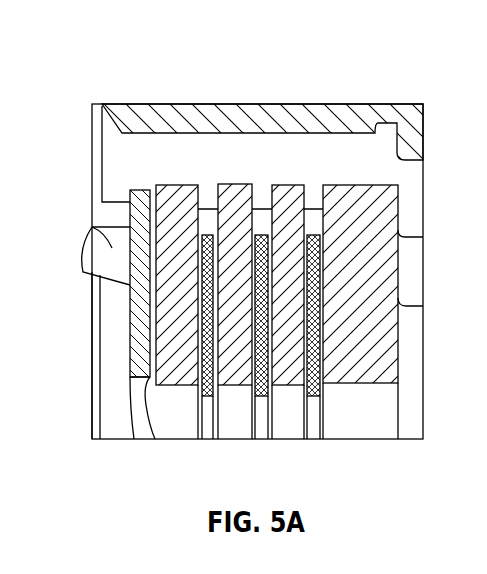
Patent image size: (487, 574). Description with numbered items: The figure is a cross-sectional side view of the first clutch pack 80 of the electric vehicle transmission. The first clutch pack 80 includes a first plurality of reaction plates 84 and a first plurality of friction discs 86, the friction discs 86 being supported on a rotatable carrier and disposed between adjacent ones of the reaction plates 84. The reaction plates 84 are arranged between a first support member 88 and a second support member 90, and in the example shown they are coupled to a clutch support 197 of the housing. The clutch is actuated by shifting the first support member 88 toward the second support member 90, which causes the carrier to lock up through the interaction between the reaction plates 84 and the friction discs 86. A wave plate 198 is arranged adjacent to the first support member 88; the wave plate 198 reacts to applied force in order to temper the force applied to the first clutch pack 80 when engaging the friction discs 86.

The first clutch pack 80 is at (138, 161).
The first plurality of reaction plates 84 is at (234, 184).
The first plurality of friction discs 86 is at (317, 283).
The first support member 88 is at (175, 237).
The second support member 90 is at (378, 288).
The clutch support 197 is at (92, 227).
The wave plate 198 is at (131, 351).